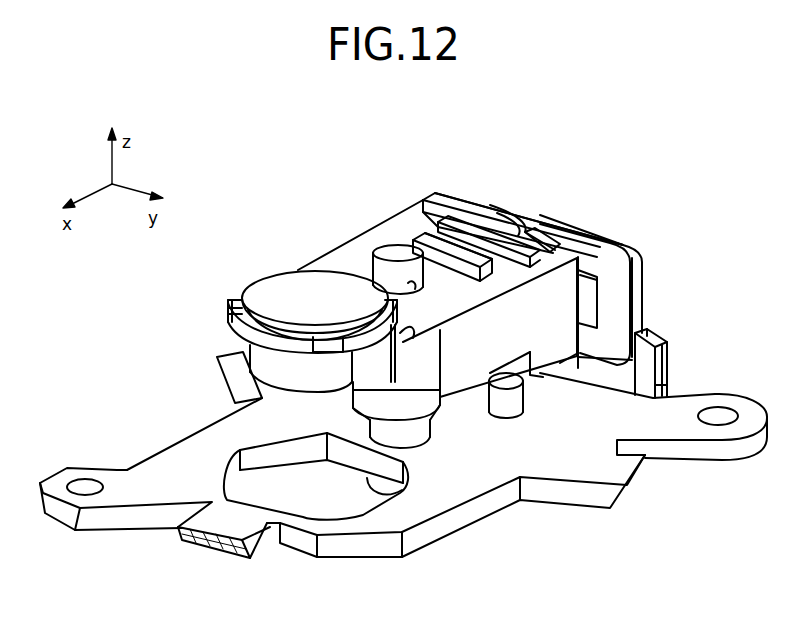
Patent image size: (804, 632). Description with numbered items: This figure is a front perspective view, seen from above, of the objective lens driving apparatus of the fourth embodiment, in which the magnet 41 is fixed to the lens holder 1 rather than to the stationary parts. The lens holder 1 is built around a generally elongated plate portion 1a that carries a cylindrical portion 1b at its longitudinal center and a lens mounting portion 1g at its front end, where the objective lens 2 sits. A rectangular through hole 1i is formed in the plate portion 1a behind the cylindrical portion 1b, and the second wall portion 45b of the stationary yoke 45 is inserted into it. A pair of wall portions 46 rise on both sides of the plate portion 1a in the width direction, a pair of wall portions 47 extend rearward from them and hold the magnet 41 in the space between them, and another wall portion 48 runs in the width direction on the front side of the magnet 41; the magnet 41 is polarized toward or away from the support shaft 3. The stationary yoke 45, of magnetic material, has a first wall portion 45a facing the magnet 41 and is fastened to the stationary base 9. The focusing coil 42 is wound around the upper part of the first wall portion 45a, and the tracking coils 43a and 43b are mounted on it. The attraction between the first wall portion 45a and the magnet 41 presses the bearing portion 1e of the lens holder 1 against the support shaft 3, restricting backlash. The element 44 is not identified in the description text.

The lens holder 1 is at (348, 250).
The plate portion 1a is at (407, 362).
The cylindrical portion 1b is at (427, 407).
The bearing portion 1e is at (415, 284).
The lens mounting portion 1g is at (232, 330).
The through hole 1i is at (497, 257).
The objective lens 2 is at (270, 298).
The support shaft 3 is at (393, 250).
The stationary base 9 is at (383, 518).
The magnet 41 is at (530, 250).
The focusing coil 42 is at (642, 270).
The tracking coil 43a is at (467, 200).
The tracking coil 43b is at (606, 265).
The post 44 is at (668, 365).
The stationary yoke 45 is at (665, 387).
The first wall portion 45a is at (660, 353).
The second wall portion 45b is at (450, 248).
The wall portion 46 is at (497, 377).
The wall portion 47 is at (415, 222).
The wall portion 48 is at (530, 373).